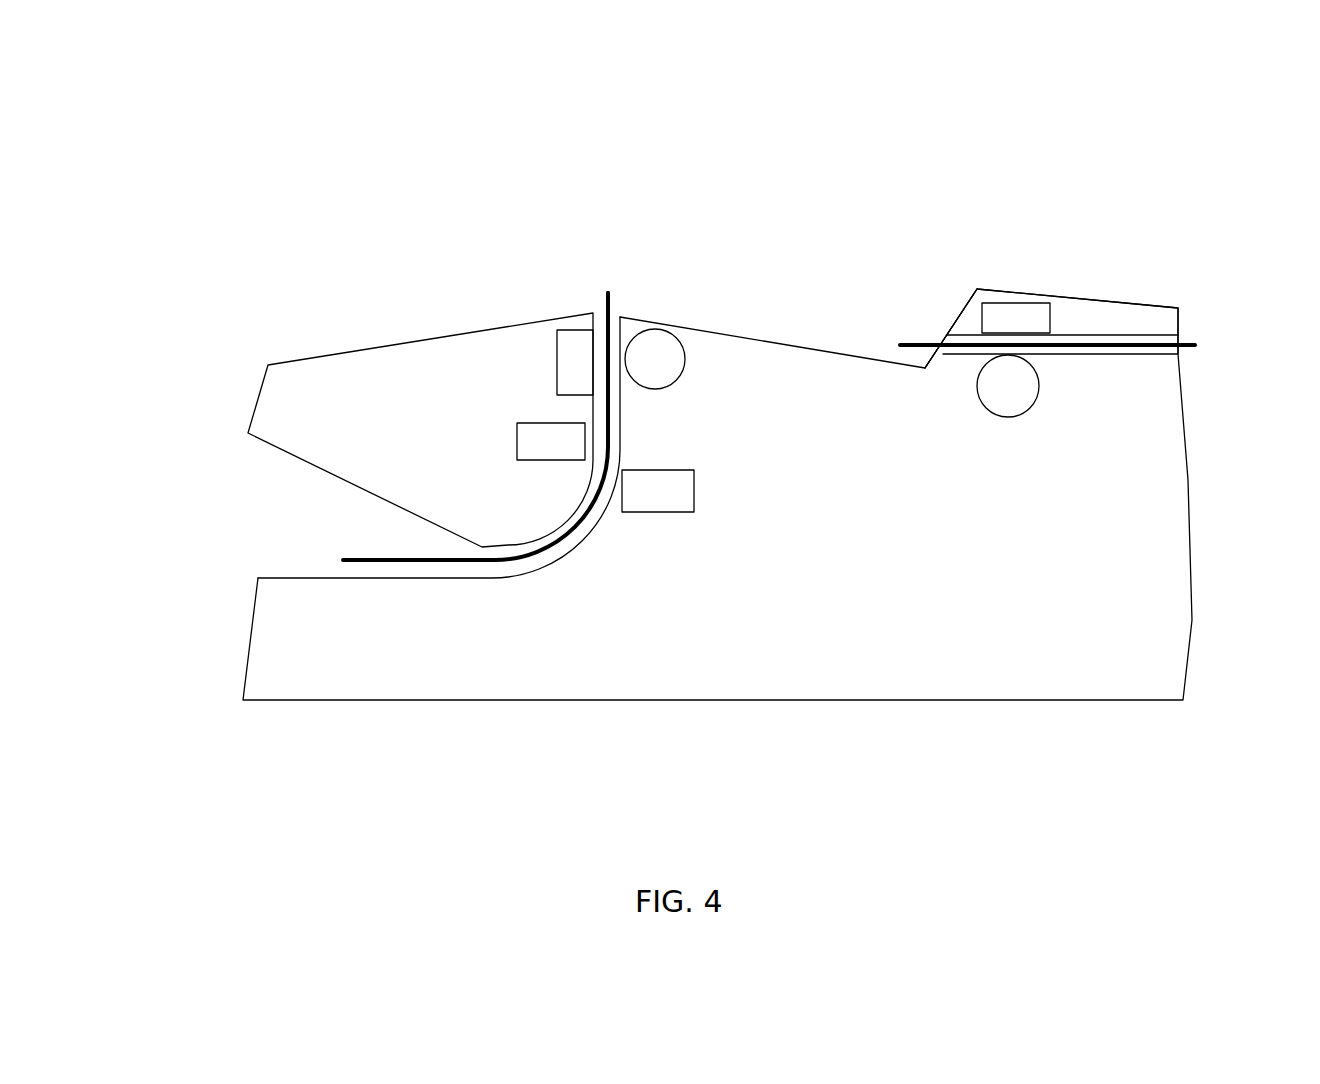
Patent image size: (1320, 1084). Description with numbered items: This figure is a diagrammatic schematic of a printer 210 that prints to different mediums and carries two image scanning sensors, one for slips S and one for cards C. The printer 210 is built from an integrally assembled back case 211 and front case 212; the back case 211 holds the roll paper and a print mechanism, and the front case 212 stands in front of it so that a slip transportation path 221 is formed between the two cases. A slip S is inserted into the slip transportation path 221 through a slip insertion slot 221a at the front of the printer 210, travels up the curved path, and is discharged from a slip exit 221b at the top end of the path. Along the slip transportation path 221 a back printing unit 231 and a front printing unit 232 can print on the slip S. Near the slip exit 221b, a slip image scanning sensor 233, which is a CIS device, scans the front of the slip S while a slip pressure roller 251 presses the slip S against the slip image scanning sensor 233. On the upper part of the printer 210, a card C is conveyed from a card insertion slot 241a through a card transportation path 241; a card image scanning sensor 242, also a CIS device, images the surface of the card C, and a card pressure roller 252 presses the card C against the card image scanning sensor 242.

The printer 210 is at (766, 186).
The back case 211 is at (907, 683).
The front case 212 is at (407, 367).
The slip transportation path 221 is at (620, 431).
The slip insertion slot 221a is at (276, 532).
The slip exit 221b is at (620, 298).
The back printing unit 231 is at (656, 512).
The front printing unit 232 is at (517, 445).
The slip image scanning sensor 233 is at (574, 328).
The card transportation path 241 is at (1133, 335).
The card insertion slot 241a is at (937, 329).
The card image scanning sensor 242 is at (1028, 315).
The slip pressure roller 251 is at (658, 345).
The card pressure roller 252 is at (1007, 403).
The slip S is at (606, 292).
The card C is at (1193, 342).